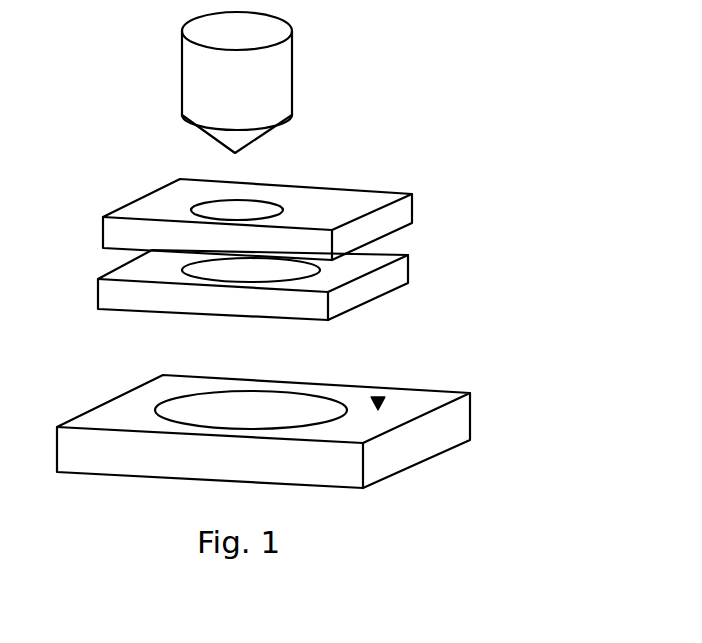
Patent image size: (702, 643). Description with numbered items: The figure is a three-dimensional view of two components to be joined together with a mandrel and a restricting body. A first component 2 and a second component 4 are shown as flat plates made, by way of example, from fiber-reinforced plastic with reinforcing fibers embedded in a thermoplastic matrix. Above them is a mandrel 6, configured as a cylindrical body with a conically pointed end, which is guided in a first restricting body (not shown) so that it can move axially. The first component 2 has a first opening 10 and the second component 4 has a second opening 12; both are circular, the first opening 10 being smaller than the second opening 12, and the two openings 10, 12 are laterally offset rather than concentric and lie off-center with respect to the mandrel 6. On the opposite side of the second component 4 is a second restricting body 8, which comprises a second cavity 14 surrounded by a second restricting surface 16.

The mandrel 6 is at (278, 80).
The first component 2 is at (363, 198).
The first opening 10 is at (262, 212).
The second component 4 is at (387, 253).
The second opening 12 is at (253, 270).
The second restricting body 8 is at (437, 398).
The second cavity 14 is at (303, 421).
The second restricting surface 16 is at (378, 398).